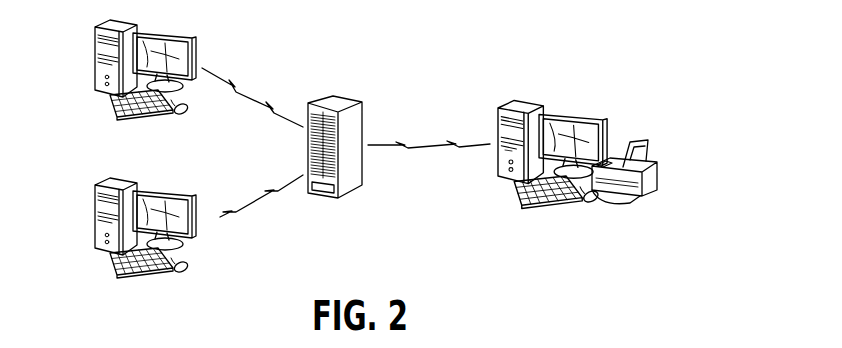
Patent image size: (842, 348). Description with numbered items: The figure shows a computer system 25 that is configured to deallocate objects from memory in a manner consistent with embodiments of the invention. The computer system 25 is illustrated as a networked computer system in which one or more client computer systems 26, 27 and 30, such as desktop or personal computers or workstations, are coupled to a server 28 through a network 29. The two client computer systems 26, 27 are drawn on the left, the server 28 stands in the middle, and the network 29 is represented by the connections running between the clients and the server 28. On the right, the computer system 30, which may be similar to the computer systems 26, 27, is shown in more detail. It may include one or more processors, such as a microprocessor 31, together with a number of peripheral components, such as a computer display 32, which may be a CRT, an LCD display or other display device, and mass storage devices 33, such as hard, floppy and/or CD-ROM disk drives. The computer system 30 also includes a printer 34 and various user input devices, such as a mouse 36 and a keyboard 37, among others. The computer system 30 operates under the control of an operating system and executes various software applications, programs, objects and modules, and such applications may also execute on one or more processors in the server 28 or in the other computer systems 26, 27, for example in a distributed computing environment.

The computer system 25 is at (463, 50).
The client computer system 26 is at (105, 21).
The client computer system 27 is at (105, 180).
The server 28 is at (340, 102).
The network 29 is at (245, 90).
The computer system 30 is at (581, 161).
The microprocessor 31 is at (498, 163).
The computer display 32 is at (567, 115).
The mass storage devices 33 is at (505, 150).
The printer 34 is at (652, 162).
The mouse 36 is at (585, 200).
The keyboard 37 is at (547, 200).